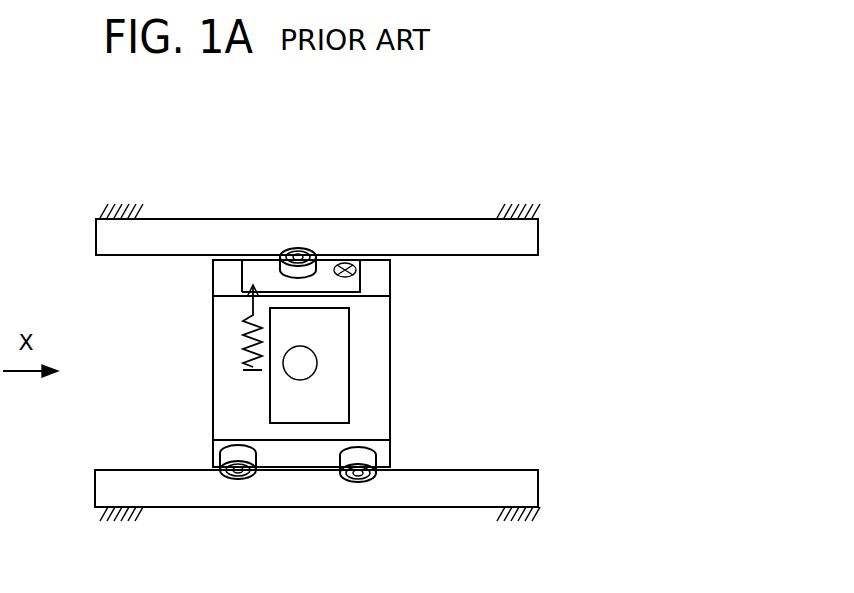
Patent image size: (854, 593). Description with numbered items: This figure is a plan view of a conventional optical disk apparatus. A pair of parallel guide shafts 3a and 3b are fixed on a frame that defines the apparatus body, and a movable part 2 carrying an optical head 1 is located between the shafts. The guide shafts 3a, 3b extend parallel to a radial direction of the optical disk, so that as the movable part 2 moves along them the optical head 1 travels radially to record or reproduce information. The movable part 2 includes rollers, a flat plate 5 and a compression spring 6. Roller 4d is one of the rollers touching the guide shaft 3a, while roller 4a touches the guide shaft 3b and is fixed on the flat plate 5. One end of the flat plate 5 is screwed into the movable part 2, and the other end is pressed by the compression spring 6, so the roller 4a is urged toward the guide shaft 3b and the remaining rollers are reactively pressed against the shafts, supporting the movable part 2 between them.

The optical head 1 is at (343, 358).
The movable part 2 is at (392, 398).
The guide shaft 3a is at (455, 500).
The guide shaft 3b is at (440, 238).
The roller 4a is at (299, 250).
The roller 4d is at (360, 486).
The flat plate 5 is at (262, 270).
The compression spring 6 is at (245, 325).